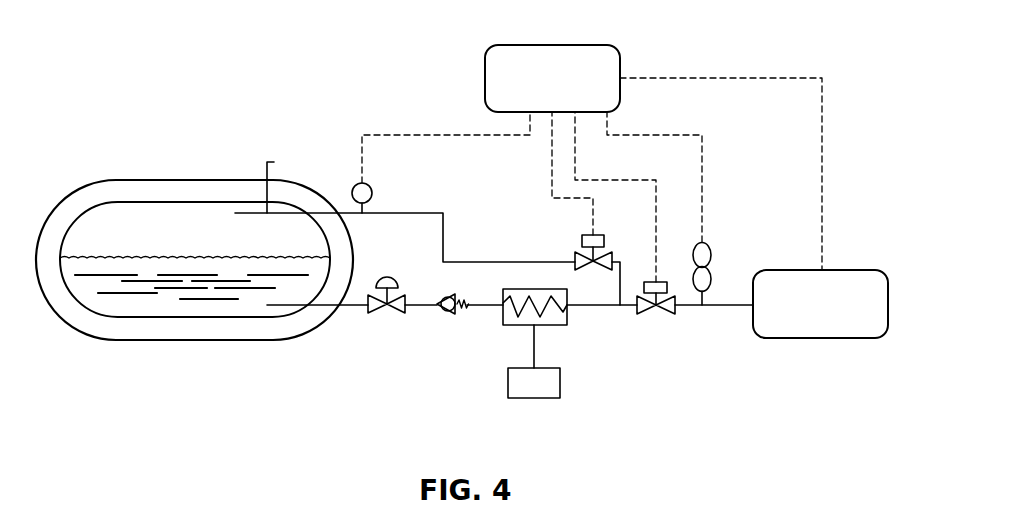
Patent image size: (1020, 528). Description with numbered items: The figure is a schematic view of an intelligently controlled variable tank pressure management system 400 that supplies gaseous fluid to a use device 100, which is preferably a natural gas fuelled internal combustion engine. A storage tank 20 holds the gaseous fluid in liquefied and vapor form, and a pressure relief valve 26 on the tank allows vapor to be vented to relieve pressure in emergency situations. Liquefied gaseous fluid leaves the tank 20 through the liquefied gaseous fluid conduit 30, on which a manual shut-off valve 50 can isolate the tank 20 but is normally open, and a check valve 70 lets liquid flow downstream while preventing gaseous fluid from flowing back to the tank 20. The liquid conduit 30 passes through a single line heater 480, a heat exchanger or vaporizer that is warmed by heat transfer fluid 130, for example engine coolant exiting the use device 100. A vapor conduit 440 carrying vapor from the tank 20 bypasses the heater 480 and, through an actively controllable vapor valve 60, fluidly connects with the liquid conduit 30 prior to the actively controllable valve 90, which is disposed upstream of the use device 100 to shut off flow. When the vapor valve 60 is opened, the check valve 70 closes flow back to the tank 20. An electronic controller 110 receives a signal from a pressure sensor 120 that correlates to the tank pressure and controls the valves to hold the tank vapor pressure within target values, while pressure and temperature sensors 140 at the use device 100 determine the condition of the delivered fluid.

The intelligently controlled variable tank pressure management system 400 is at (271, 89).
The storage tank 20 is at (100, 181).
The pressure relief valve 26 is at (263, 173).
The liquefied gaseous fluid conduit 30 is at (348, 306).
The manual shut-off valve 50 is at (387, 314).
The actively controllable vapor valve 60 is at (576, 255).
The check valve 70 is at (448, 312).
The actively controllable valve 90 is at (662, 316).
The use device 100 is at (838, 316).
The electronic controller 110 is at (571, 90).
The pressure sensor 120 is at (353, 192).
The heat transfer fluid 130 is at (534, 361).
The pressure and temperature sensors 140 is at (712, 253).
The vapor conduit 440 is at (402, 213).
The single line heater 480 is at (515, 326).